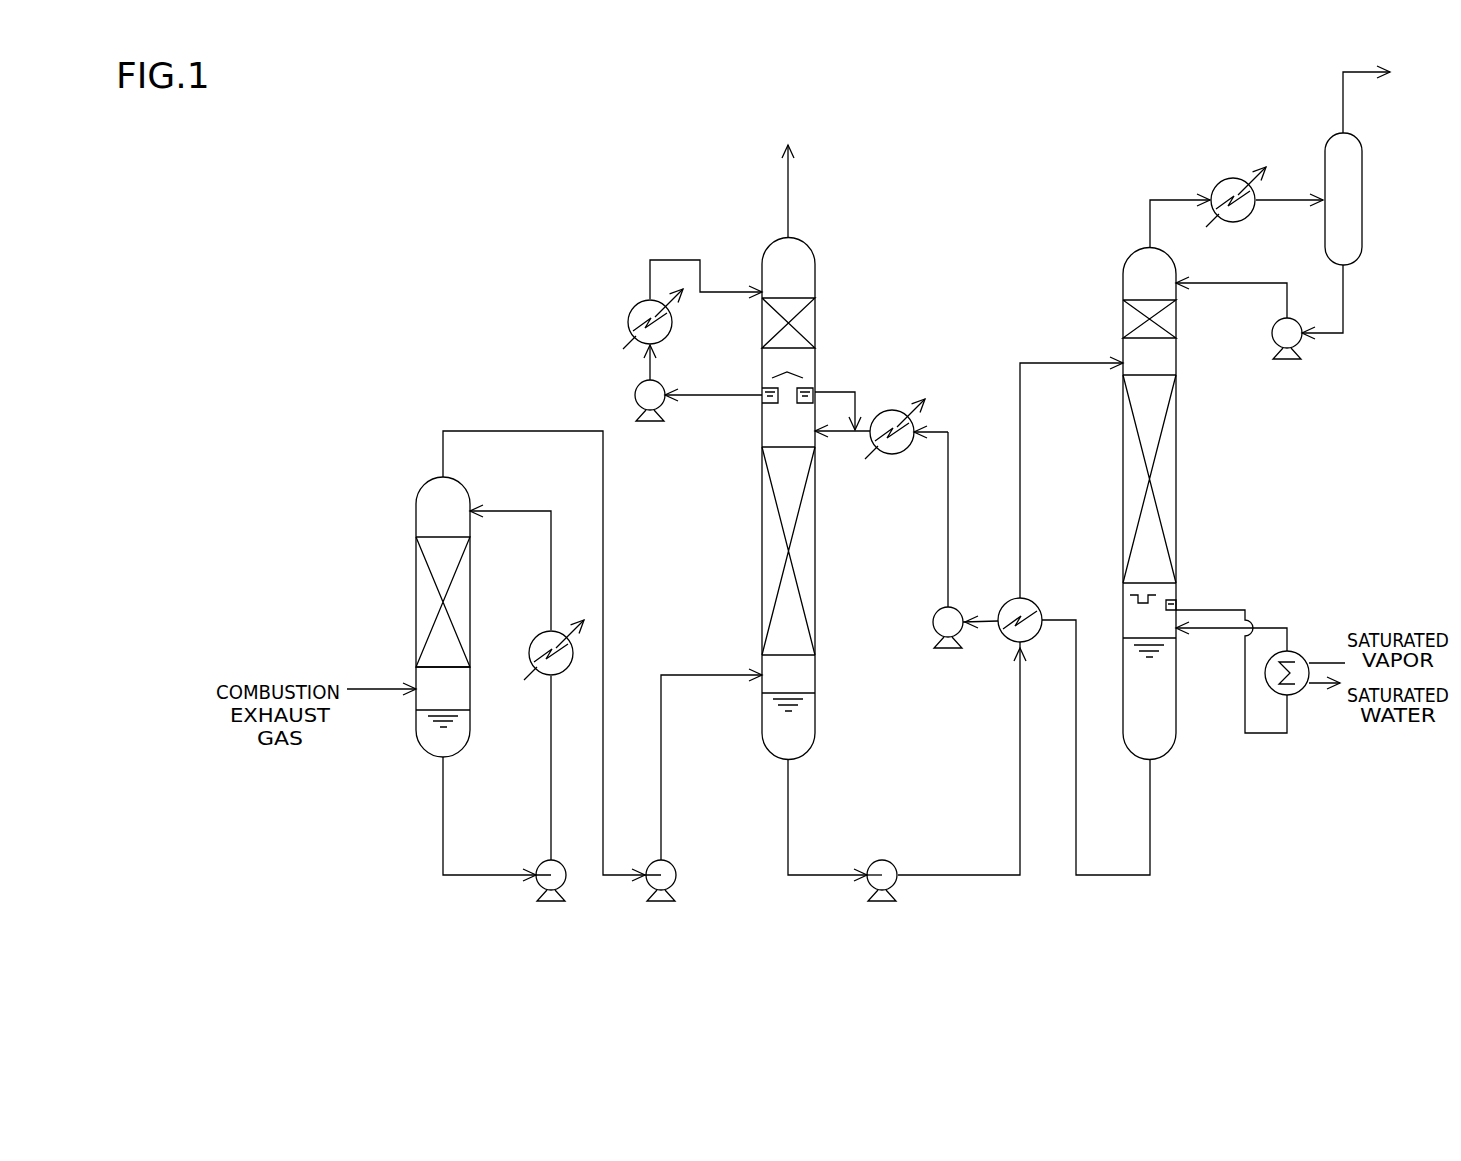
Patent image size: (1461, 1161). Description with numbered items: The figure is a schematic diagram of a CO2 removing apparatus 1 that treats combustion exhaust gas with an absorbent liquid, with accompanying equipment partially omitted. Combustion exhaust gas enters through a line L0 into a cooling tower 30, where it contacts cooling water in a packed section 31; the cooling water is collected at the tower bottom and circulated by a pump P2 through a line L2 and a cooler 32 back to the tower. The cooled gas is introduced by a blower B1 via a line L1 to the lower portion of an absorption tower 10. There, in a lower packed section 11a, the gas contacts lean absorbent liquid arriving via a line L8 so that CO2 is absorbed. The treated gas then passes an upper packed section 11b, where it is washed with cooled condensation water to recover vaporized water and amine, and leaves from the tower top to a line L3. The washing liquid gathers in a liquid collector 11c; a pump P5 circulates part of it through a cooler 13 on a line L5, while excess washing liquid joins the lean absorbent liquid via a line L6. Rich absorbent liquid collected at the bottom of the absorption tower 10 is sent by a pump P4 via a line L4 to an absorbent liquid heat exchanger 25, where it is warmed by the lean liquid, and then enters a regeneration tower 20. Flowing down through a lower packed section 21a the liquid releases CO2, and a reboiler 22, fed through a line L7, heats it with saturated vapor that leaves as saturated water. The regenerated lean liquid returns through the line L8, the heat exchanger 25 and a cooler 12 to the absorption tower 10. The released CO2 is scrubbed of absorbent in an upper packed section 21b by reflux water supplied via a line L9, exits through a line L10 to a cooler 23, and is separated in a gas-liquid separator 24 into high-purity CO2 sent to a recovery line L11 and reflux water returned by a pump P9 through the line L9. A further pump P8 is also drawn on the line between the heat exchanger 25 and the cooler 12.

The CO2 removing apparatus 1 is at (458, 222).
The absorption tower 10 is at (748, 232).
The lower packed section 11a is at (770, 545).
The upper packed section 11b is at (810, 324).
The liquid collector 11c is at (758, 398).
The cooler 12 is at (896, 456).
The cooler 13 is at (630, 305).
The regeneration tower 20 is at (1100, 240).
The lower packed section 21a is at (1178, 478).
The upper packed section 21b is at (1120, 320).
The reboiler 22 is at (1295, 652).
The cooler 23 is at (1225, 180).
The gas-liquid separator 24 is at (1364, 212).
The absorbent liquid heat exchanger 25 is at (1022, 596).
The cooling tower 30 is at (398, 480).
The packed section 31 is at (426, 604).
The cooler 32 is at (535, 638).
The line L0 is at (381, 673).
The line L1 is at (544, 638).
The line L2 is at (489, 819).
The line L3 is at (802, 191).
The line L4 is at (827, 820).
The line L5 is at (713, 381).
The line L6 is at (838, 394).
The line L7 is at (1231, 694).
The line L8 is at (1110, 907).
The line L9 is at (1231, 298).
The line L10 is at (1179, 208).
The recovery line L11 is at (1373, 95).
The pump P2 is at (551, 902).
The pump P4 is at (882, 902).
The pump P5 is at (650, 422).
The semi-rich solution pump P8 is at (932, 612).
The pump P9 is at (1287, 352).
The blower B1 is at (678, 880).